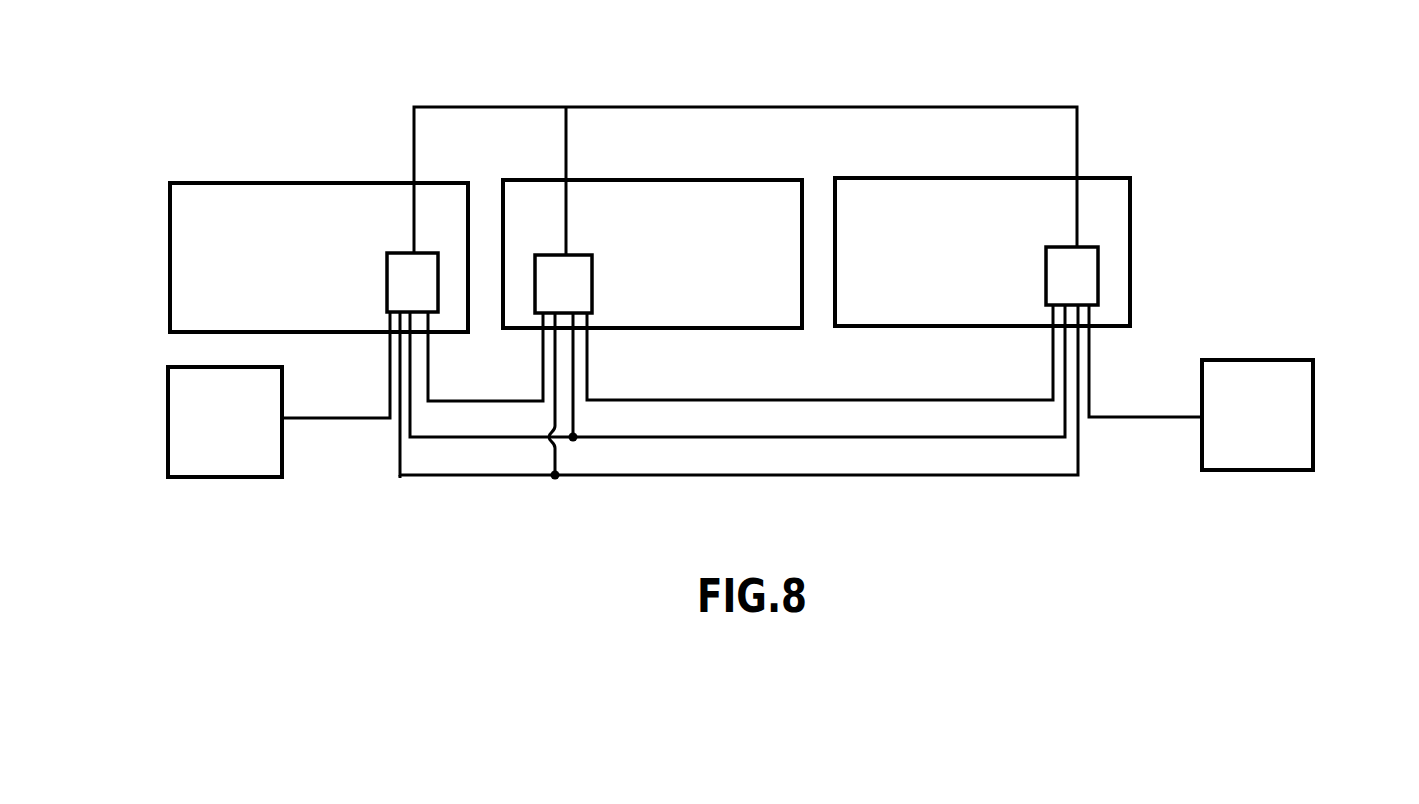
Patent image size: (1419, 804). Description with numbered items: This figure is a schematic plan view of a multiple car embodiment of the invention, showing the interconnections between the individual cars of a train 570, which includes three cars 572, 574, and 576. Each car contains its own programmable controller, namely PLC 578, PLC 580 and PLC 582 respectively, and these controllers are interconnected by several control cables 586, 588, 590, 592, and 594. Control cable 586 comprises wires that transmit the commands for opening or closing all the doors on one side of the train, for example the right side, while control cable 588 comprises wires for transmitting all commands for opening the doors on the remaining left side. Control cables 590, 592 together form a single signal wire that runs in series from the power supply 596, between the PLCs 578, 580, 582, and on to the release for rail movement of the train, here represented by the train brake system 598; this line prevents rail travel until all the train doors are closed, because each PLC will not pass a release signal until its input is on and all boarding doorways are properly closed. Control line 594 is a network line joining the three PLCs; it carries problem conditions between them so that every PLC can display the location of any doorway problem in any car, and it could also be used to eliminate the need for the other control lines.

The train 570 is at (444, 495).
The car 572 is at (213, 197).
The car 574 is at (618, 195).
The car 576 is at (858, 190).
The PLC 578 is at (405, 285).
The PLC 580 is at (575, 285).
The PLC 582 is at (1065, 268).
The control cable 586 is at (677, 473).
The control cable 588 is at (800, 440).
The control cable 590 is at (512, 400).
The control cable 592 is at (803, 398).
The control line 594 is at (693, 106).
The power supply 596 is at (165, 408).
The train brake system 598 is at (1313, 416).